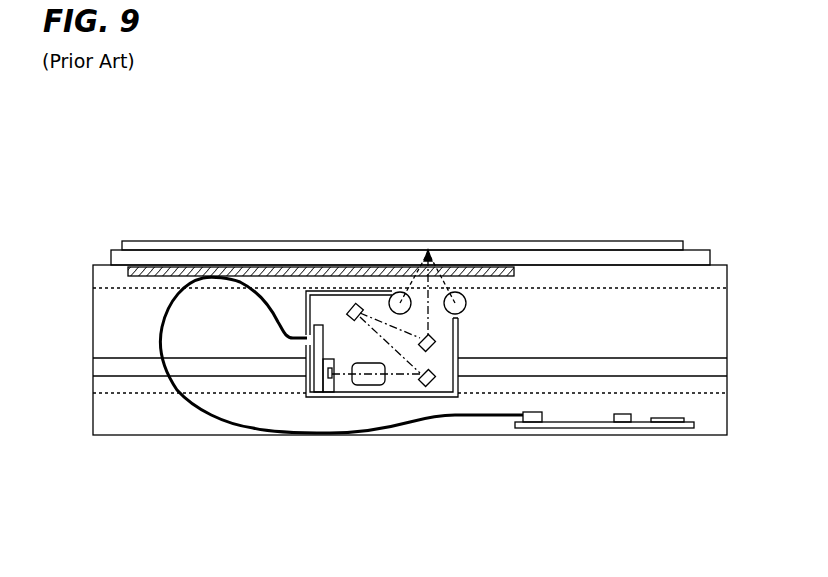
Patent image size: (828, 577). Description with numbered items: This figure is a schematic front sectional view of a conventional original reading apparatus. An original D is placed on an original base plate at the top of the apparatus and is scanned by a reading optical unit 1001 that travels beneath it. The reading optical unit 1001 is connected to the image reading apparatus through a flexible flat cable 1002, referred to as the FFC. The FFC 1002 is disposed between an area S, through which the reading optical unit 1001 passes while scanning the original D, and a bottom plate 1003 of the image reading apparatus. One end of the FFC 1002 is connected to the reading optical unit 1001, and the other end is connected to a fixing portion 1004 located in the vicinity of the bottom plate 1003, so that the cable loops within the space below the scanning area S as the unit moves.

The reading optical unit 1001 is at (330, 398).
The flexible flat cable 1002 is at (210, 417).
The bottom plate 1003 is at (427, 435).
The fixing portion 1004 is at (532, 422).
The original D is at (369, 242).
The area S is at (88, 287).